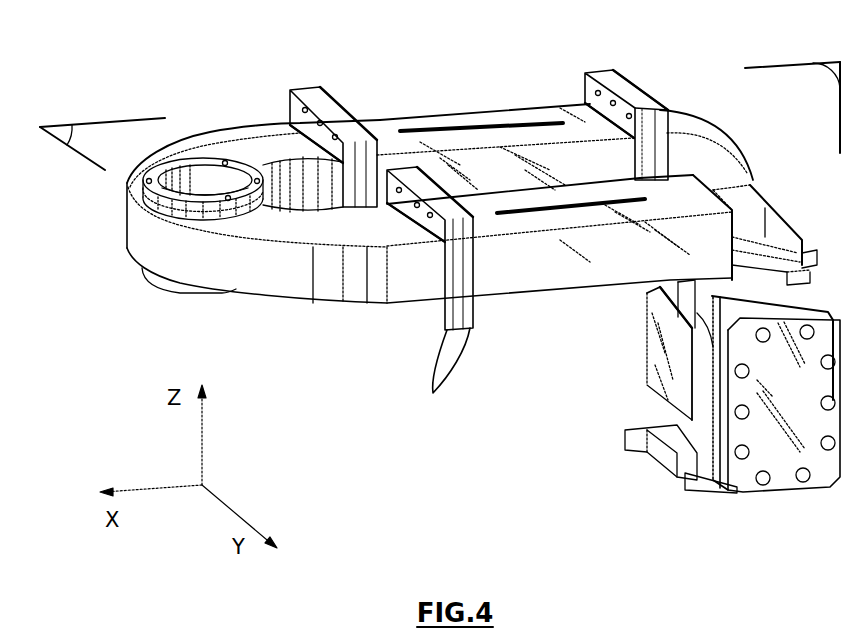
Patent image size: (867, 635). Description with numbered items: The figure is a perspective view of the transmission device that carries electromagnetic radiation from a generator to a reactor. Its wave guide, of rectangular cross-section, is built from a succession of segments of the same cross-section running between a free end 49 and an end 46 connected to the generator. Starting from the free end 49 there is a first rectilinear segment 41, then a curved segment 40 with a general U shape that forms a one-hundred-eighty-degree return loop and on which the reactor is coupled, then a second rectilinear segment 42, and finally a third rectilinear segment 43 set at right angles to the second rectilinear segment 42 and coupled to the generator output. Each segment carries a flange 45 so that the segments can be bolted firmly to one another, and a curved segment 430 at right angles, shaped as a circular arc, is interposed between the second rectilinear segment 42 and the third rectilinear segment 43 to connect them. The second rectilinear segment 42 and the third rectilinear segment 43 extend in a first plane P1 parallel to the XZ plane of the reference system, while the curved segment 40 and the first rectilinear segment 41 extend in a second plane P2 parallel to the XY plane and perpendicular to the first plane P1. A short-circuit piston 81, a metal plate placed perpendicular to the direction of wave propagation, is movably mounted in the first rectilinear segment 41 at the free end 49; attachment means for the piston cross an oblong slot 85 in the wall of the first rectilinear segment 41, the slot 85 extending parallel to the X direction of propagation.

The curved segment 40 is at (130, 233).
The first rectilinear segment 41 is at (513, 283).
The second rectilinear segment 42 is at (388, 127).
The third rectilinear segment 43 is at (700, 425).
The flange 45 is at (307, 87).
The end of the wave guide connected to the generator 46 is at (697, 453).
The free end of the wave guide 49 is at (733, 136).
The short-circuit piston 81 is at (752, 218).
The slot 85 is at (484, 127).
The curved segment at right angles 430 is at (757, 182).
The first plane P1 is at (797, 88).
The second plane P2 is at (92, 133).